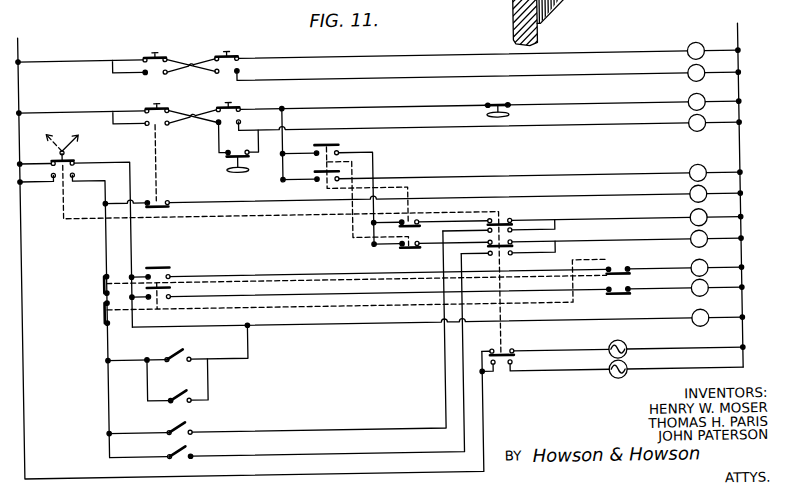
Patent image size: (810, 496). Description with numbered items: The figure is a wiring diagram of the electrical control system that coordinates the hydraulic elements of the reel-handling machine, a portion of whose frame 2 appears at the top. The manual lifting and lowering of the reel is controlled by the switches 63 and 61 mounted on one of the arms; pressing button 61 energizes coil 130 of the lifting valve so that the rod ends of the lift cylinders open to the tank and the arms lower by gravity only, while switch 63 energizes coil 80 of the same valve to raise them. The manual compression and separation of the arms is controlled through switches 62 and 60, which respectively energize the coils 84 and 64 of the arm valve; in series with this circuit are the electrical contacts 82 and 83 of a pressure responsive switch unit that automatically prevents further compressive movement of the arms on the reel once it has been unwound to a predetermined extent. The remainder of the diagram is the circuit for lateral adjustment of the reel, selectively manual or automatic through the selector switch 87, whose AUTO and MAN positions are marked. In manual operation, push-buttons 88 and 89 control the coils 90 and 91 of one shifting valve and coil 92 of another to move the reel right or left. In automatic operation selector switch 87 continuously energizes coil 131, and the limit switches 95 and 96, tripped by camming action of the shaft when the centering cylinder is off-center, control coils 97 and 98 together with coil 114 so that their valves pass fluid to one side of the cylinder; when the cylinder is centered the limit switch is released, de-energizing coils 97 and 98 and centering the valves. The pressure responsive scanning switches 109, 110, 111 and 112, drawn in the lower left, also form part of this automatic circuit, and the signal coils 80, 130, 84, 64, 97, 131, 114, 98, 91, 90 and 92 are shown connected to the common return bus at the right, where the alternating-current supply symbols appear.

The machine frame 2 is at (568, 19).
The switch 60 is at (228, 106).
The button 61 is at (227, 55).
The open button 62 is at (156, 106).
The switch 63 is at (155, 55).
The coil 64 is at (688, 138).
The coil 80 is at (690, 54).
The electrical contacts 82 is at (223, 161).
The electrical contacts 83 is at (508, 110).
The coil 84 is at (688, 109).
The selector switch 87 is at (74, 161).
The push-button 88 is at (99, 318).
The push-button 89 is at (99, 282).
The coil 90 is at (691, 301).
The coil 91 is at (690, 280).
The coil 92 is at (691, 330).
The limit switch 95 is at (313, 176).
The limit switch 96 is at (338, 150).
The coil 97 is at (694, 176).
The coil 98 is at (690, 252).
The pressure responsive scanning switch 109 is at (186, 356).
The pressure responsive scanning switch 110 is at (166, 454).
The pressure responsive scanning switch 111 is at (167, 428).
The pressure responsive scanning switch 112 is at (172, 388).
The coil 114 is at (690, 230).
The coil 130 is at (688, 79).
The coil 131 is at (690, 208).